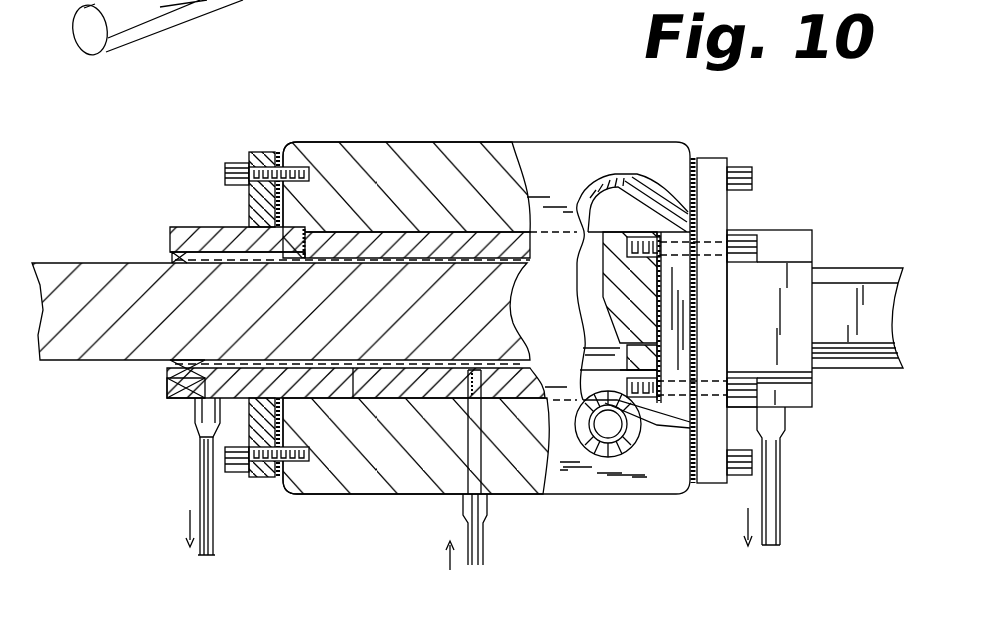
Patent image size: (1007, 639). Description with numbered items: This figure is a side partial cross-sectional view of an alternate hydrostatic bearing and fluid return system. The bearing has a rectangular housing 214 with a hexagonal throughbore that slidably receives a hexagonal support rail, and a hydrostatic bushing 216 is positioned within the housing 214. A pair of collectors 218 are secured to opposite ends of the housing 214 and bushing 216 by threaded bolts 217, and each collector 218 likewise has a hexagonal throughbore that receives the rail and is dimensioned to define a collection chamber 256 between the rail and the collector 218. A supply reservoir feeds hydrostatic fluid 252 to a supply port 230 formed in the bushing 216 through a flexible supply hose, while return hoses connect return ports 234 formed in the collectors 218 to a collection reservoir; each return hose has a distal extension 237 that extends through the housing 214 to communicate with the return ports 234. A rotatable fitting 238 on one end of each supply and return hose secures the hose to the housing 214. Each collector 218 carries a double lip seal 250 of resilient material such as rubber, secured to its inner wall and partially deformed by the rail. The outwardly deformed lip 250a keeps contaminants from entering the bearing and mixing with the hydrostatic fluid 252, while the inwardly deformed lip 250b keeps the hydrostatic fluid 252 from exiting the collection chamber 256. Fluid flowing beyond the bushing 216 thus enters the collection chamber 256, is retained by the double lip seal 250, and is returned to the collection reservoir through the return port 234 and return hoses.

The housing 214 is at (513, 143).
The hydrostatic bushing 216 is at (378, 232).
The threaded bolts 217 is at (233, 163).
The collectors 218 is at (198, 227).
The supply port 230 is at (450, 398).
The return ports 234 is at (197, 407).
The distal extension 237 is at (210, 358).
The rotatable fitting 238 is at (198, 440).
The double lip seal 250 is at (177, 268).
The outwardly deformed lip 250a is at (180, 271).
The inwardly deformed lip 250b is at (175, 258).
The hydrostatic fluid 252 is at (355, 400).
The collection chamber 256 is at (170, 398).